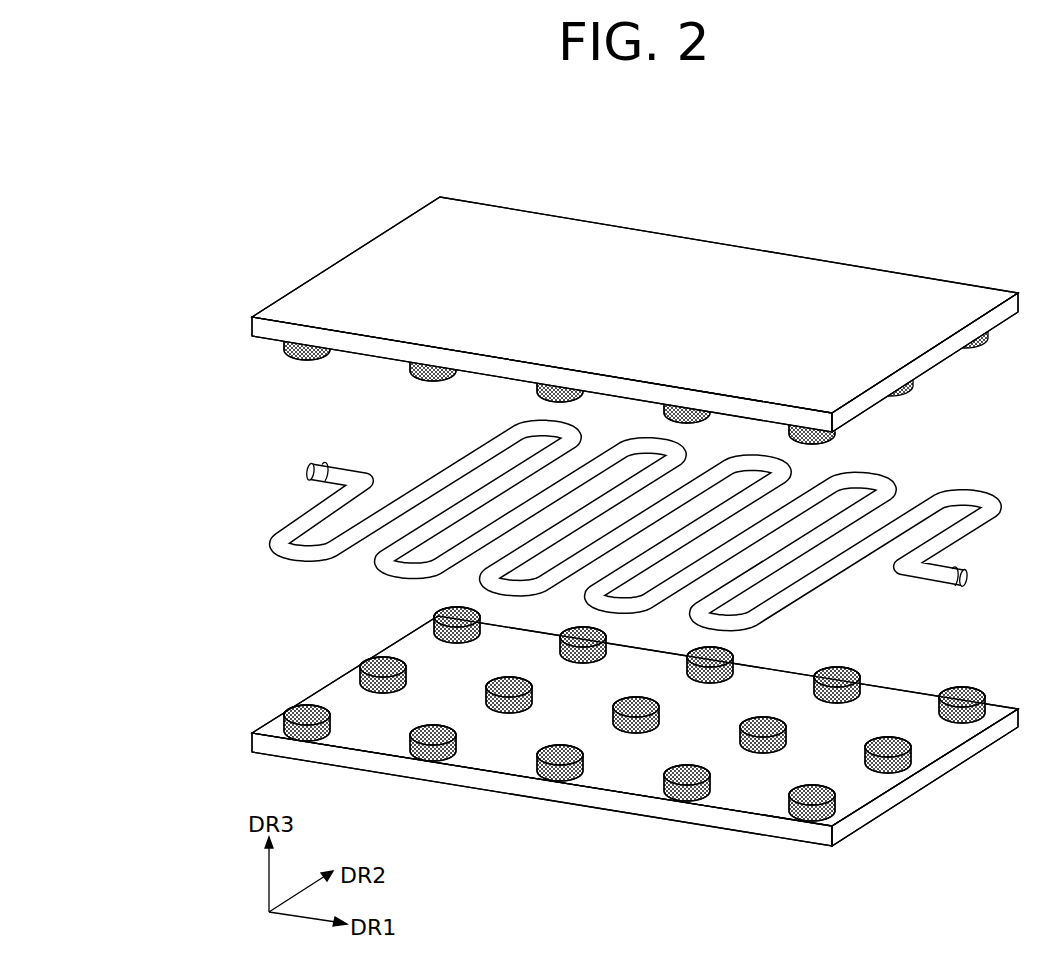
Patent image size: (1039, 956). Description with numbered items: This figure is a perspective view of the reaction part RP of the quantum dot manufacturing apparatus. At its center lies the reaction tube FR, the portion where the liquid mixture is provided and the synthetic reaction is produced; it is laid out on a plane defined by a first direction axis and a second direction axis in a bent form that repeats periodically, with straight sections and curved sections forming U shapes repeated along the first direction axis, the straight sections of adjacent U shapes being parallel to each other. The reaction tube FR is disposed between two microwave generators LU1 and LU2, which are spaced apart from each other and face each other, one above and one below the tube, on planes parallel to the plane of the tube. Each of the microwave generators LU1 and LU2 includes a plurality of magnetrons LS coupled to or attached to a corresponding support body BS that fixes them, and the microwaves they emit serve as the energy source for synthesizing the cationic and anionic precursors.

The reaction part RP is at (905, 177).
The microwave generator LU1 is at (178, 326).
The microwave generator LU2 is at (178, 708).
The support body BS is at (267, 328).
The magnetron LS is at (283, 346).
The reaction tube FR is at (304, 471).